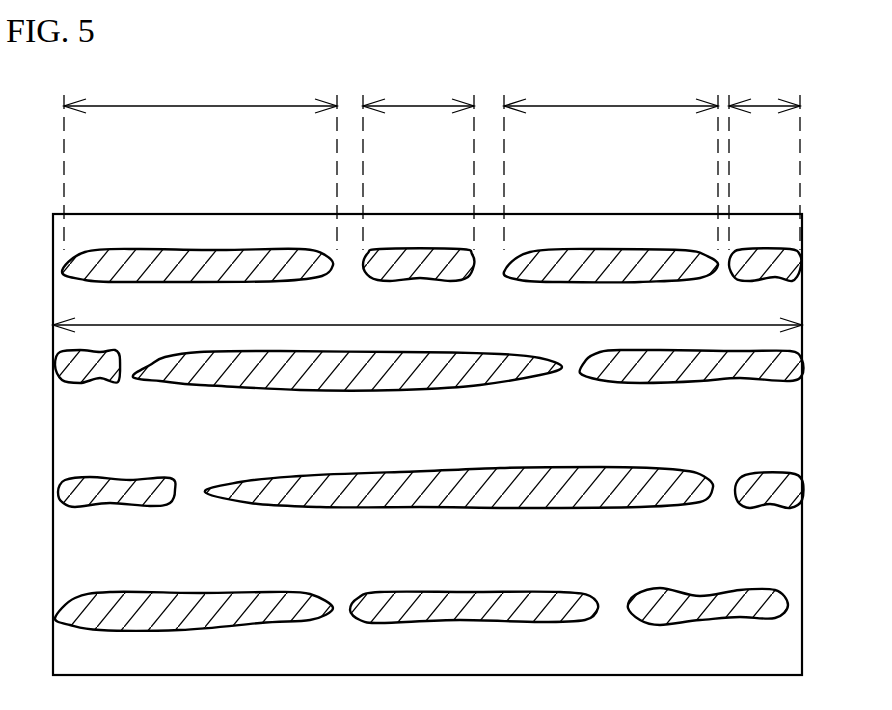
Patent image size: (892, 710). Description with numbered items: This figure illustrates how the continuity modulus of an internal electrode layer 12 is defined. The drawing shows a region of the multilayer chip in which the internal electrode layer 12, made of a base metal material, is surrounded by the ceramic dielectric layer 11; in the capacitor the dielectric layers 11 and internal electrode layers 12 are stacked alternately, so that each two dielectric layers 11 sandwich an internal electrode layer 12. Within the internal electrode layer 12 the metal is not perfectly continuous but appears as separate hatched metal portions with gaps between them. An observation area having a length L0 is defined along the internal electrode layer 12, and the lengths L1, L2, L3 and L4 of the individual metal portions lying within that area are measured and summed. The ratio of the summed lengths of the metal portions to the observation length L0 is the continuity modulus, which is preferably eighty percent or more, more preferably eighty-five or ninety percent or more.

The dielectric layer 11 is at (780, 427).
The internal electrode layer 12 is at (780, 263).
The length of observation area L0 is at (427, 312).
The length of metal portion L1 is at (200, 158).
The length of metal portion L2 is at (418, 158).
The length of metal portion L3 is at (611, 158).
The length of metal portion L4 is at (764, 158).